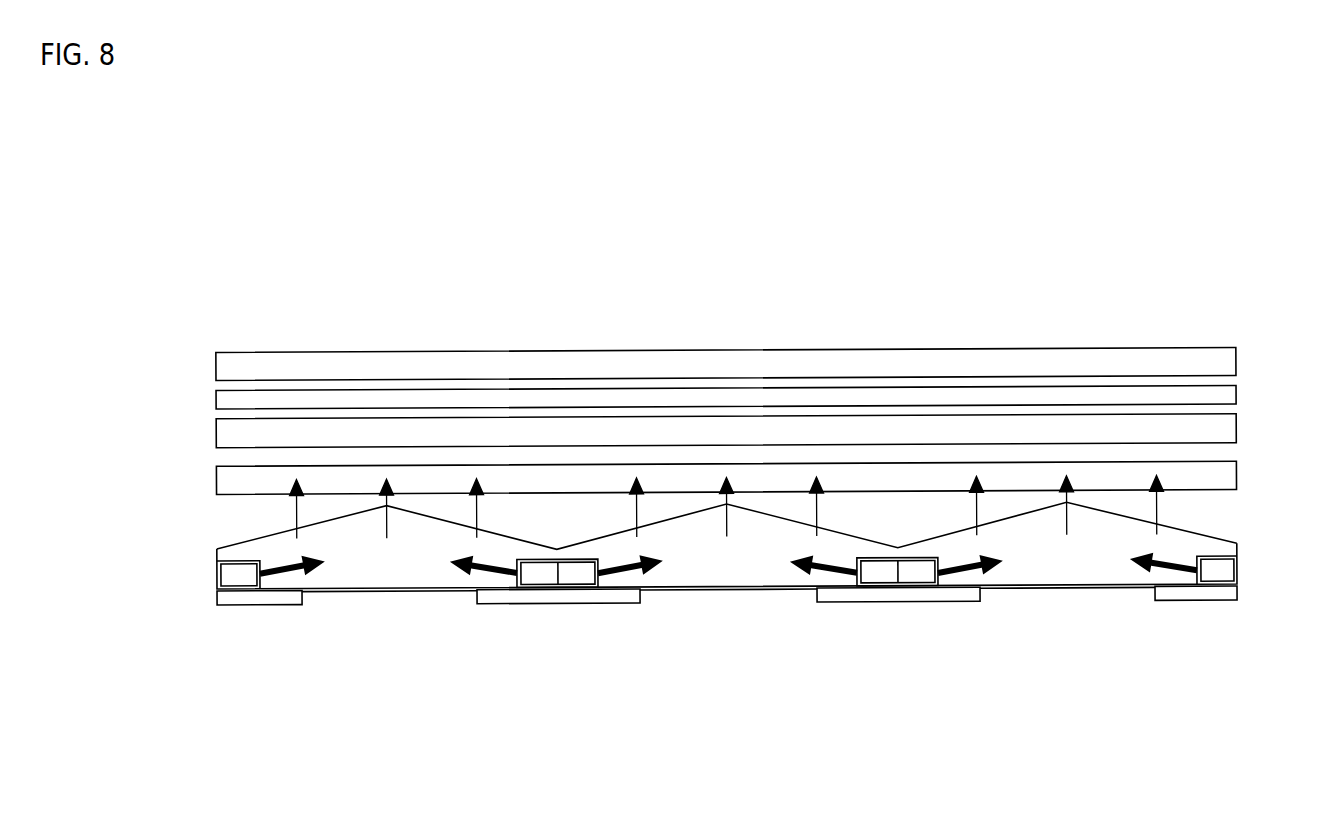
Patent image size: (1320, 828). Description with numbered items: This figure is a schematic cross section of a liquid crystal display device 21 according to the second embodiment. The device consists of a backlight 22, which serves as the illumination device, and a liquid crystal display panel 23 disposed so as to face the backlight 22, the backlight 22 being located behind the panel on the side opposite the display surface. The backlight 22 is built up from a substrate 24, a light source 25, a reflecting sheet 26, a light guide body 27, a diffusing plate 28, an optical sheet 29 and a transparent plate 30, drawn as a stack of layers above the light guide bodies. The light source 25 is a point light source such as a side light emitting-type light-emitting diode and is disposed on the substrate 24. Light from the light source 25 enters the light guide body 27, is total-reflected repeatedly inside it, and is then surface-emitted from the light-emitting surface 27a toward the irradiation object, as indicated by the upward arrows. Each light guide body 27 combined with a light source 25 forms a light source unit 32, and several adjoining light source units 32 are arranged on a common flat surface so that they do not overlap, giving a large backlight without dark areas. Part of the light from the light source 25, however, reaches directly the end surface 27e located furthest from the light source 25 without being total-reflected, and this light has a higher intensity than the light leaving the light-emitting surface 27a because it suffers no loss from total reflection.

The liquid crystal display device 21 is at (1071, 214).
The backlight 22 is at (201, 391).
The liquid crystal display panel 23 is at (1231, 362).
The substrate 24 is at (493, 598).
The light source 25 is at (878, 575).
The reflecting sheet 26 is at (382, 595).
The light guide body 27 is at (727, 581).
The light-emitting surface 27a is at (347, 517).
The end surface 27e is at (558, 552).
The diffusing plate 28 is at (1231, 431).
The optical sheet 29 is at (1231, 397).
The transparent plate 30 is at (1231, 479).
The light source unit 32 is at (311, 625).